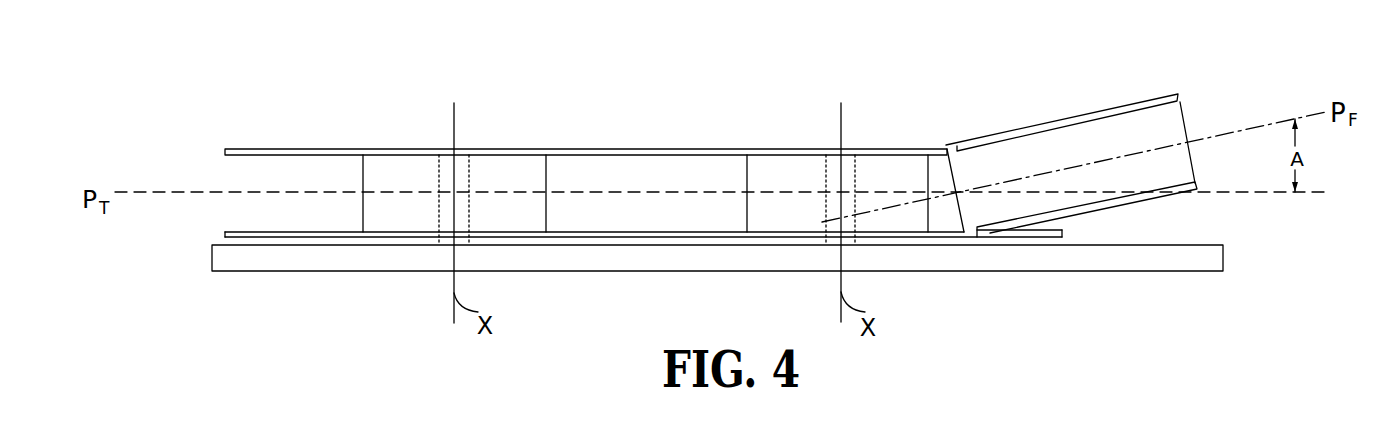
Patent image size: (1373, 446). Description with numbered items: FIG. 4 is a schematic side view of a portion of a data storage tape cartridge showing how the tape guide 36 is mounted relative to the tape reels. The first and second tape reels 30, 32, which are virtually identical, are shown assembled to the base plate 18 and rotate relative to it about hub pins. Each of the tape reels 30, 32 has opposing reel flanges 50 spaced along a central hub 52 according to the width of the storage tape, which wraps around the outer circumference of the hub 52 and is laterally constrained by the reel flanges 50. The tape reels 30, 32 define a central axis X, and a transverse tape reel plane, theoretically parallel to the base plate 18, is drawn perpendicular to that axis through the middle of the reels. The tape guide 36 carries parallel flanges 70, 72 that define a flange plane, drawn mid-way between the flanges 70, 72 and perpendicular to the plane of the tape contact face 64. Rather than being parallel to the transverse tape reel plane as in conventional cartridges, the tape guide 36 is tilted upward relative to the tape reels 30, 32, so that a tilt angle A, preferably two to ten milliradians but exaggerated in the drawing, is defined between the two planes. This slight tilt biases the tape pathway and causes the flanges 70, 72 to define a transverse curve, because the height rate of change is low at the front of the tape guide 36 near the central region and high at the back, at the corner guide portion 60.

The base plate 18 is at (279, 276).
The first tape reel 30 is at (713, 140).
The second tape reel 32 is at (468, 134).
The tape guide 36 is at (993, 215).
The reel flanges 50 is at (236, 149).
The central hub 52 is at (398, 168).
The corner guide portion 60 is at (946, 149).
The tape contact face 64 is at (1170, 130).
The flange 70 is at (1180, 94).
The flange 72 is at (1197, 186).